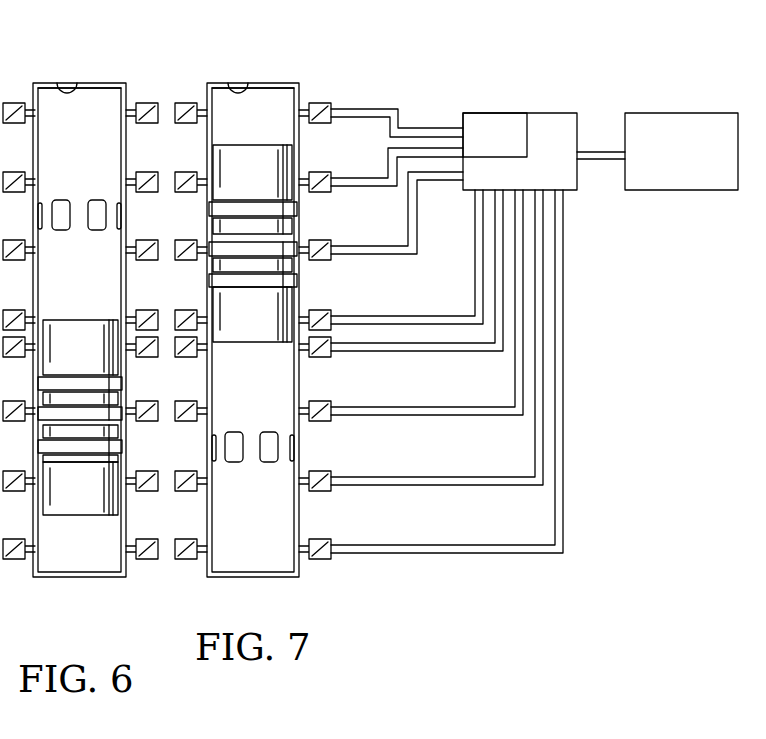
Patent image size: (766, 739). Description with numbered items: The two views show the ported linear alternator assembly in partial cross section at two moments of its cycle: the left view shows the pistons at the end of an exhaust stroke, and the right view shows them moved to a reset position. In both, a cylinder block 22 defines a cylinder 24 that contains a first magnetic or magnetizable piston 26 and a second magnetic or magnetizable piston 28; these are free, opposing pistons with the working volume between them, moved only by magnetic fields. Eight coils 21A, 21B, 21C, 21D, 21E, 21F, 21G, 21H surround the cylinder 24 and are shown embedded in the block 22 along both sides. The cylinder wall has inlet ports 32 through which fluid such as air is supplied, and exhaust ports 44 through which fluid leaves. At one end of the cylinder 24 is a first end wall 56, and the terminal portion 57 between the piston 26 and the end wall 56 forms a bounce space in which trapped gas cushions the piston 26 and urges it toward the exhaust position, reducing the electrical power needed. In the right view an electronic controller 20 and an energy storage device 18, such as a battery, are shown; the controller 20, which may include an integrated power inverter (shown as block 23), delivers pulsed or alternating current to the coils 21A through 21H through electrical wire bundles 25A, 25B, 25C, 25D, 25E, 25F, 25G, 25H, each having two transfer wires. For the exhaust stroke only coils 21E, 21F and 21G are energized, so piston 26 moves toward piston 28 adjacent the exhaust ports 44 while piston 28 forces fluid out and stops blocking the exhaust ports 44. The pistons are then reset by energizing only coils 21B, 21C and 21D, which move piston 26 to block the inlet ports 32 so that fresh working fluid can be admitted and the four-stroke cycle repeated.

In FIG. 6, the first end wall 56 is at (60, 84).
In FIG. 7, the first end wall 56 is at (231, 84).
In FIG. 6, the terminal portion 57 is at (78, 118).
In FIG. 7, the terminal portion 57 is at (253, 118).
In FIG. 6, the coil 21A is at (163, 86).
In FIG. 7, the coil 21A is at (320, 103).
In FIG. 6, the coil 21B is at (163, 158).
In FIG. 7, the coil 21B is at (320, 172).
In FIG. 6, the coil 21C is at (163, 226).
In FIG. 7, the coil 21C is at (320, 240).
In FIG. 6, the coil 21D is at (163, 296).
In FIG. 7, the coil 21D is at (320, 310).
In FIG. 6, the coil 21E is at (163, 377).
In FIG. 7, the coil 21E is at (320, 357).
In FIG. 6, the coil 21F is at (163, 445).
In FIG. 7, the coil 21F is at (320, 422).
In FIG. 6, the coil 21G is at (163, 517).
In FIG. 7, the coil 21G is at (320, 492).
In FIG. 6, the coil 21H is at (163, 587).
In FIG. 7, the coil 21H is at (320, 560).
In FIG. 6, the inlet ports 32 is at (96, 204).
In FIG. 6, the first magnetic or magnetizable piston 26 is at (91, 366).
In FIG. 7, the first magnetic or magnetizable piston 26 is at (264, 191).
In FIG. 6, the second magnetic or magnetizable piston 28 is at (91, 508).
In FIG. 7, the second magnetic or magnetizable piston 28 is at (264, 333).
In FIG. 6, the cylinder 24 is at (70, 548).
In FIG. 7, the cylinder 24 is at (246, 548).
In FIG. 6, the cylinder block 22 is at (105, 580).
In FIG. 7, the cylinder block 22 is at (281, 580).
In FIG. 7, the exhaust ports 44 is at (269, 460).
In FIG. 7, the electrical wire bundle 25A is at (405, 127).
In FIG. 7, the electrical wire bundle 25B is at (410, 148).
In FIG. 7, the electrical wire bundle 25C is at (421, 183).
In FIG. 7, the electrical wire bundle 25D is at (405, 315).
In FIG. 7, the electrical wire bundle 25E is at (405, 352).
In FIG. 7, the electrical wire bundle 25F is at (405, 417).
In FIG. 7, the electrical wire bundle 25G is at (405, 487).
In FIG. 7, the electrical wire bundle 25H is at (405, 555).
In FIG. 7, the memory 23 is at (509, 148).
In FIG. 7, the electronic controller 20 is at (564, 181).
In FIG. 7, the energy storage device 18 is at (694, 163).